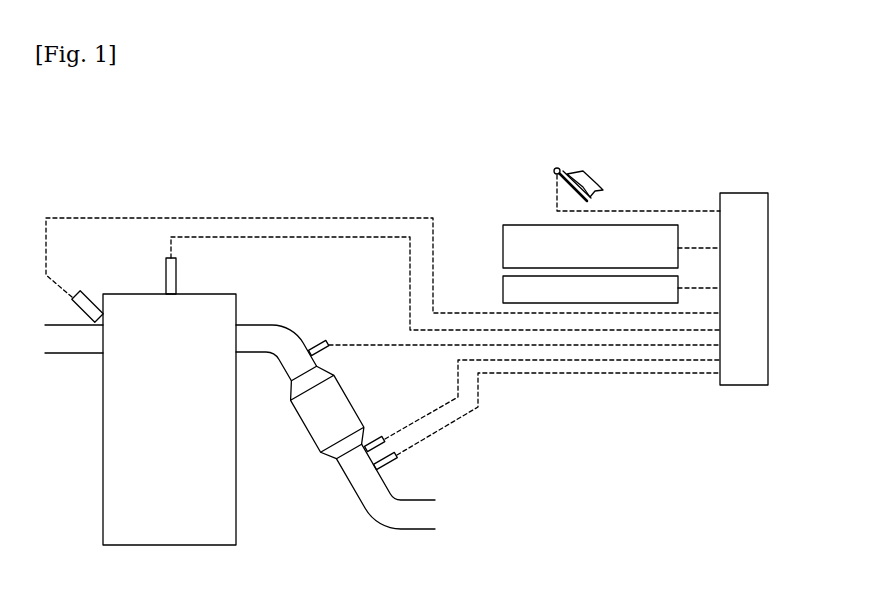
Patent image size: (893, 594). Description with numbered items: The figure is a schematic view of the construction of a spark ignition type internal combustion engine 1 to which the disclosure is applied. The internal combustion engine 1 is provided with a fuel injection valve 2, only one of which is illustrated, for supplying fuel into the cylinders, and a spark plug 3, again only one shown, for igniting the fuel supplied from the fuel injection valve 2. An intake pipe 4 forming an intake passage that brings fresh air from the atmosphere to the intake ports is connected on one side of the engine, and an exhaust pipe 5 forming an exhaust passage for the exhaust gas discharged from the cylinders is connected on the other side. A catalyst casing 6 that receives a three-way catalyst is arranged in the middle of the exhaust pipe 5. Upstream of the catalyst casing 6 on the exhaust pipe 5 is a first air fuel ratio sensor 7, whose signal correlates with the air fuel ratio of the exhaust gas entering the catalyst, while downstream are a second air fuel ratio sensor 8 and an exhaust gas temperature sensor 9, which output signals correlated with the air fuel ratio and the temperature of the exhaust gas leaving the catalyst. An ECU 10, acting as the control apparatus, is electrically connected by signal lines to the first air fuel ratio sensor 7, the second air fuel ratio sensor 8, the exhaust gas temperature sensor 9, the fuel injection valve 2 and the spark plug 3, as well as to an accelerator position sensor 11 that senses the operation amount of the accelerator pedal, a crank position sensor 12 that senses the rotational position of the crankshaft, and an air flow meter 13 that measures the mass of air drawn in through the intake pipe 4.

The internal combustion engine 1 is at (103, 485).
The fuel injection valve 2 is at (92, 296).
The spark plug 3 is at (176, 270).
The intake pipe 4 is at (72, 353).
The exhaust pipe 5 is at (273, 325).
The catalyst casing 6 is at (308, 435).
The first air fuel ratio sensor 7 is at (322, 342).
The second air fuel ratio sensor 8 is at (375, 440).
The exhaust gas temperature sensor 9 is at (392, 463).
The ECU 10 is at (768, 260).
The accelerator position sensor 11 is at (555, 169).
The crank position sensor 12 is at (503, 247).
The air flow meter 13 is at (503, 290).